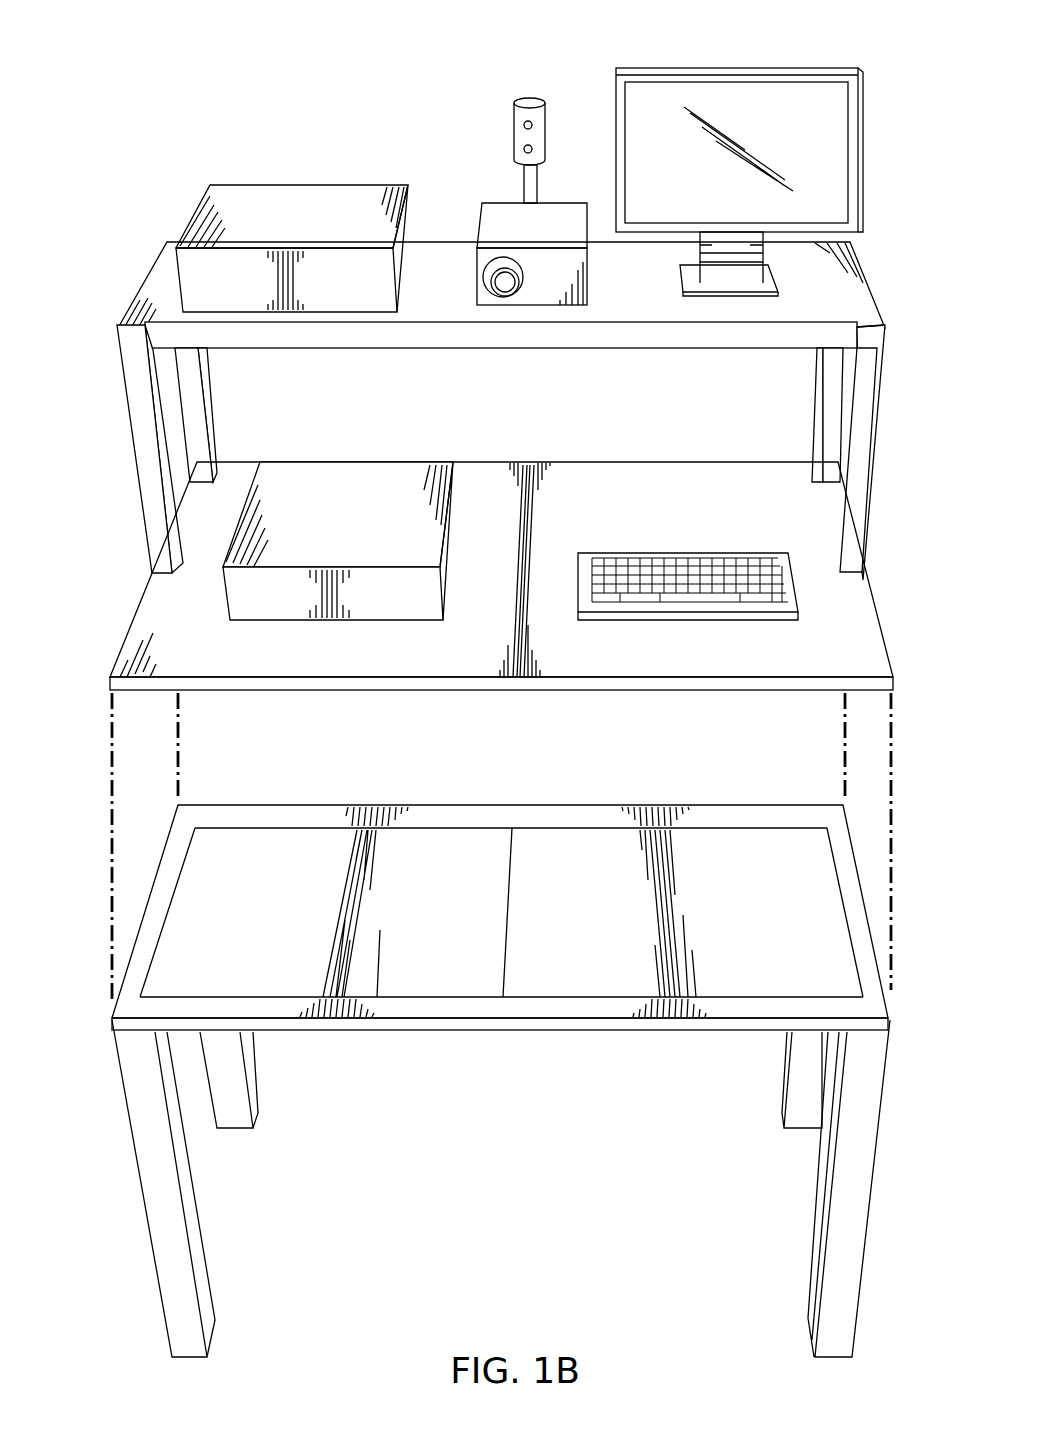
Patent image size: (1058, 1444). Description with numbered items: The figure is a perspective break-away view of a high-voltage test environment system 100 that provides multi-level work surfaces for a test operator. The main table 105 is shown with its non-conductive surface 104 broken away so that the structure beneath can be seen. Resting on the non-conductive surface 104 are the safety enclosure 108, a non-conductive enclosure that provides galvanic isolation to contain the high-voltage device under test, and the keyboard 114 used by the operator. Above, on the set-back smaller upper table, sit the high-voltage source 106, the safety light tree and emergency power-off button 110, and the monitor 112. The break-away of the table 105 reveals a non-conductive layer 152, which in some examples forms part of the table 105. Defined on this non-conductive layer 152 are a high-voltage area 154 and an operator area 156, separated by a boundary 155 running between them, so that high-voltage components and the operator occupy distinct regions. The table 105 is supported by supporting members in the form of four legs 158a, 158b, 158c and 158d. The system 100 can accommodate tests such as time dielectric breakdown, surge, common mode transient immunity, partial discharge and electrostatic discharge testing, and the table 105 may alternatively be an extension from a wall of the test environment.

The high-voltage test environment system 100 is at (362, 66).
The non-conductive surface 104 is at (623, 470).
The table 105 is at (135, 1148).
The high-voltage source 106 is at (247, 185).
The safety enclosure 108 is at (330, 462).
The safety light tree and emergency power-off button 110 is at (505, 198).
The monitor 112 is at (737, 68).
The keyboard 114 is at (685, 550).
The non-conductive layer 152 is at (458, 805).
The high-voltage area 154 is at (272, 852).
The boundary 155 is at (511, 846).
The operator area 156 is at (753, 850).
The leg 158a is at (167, 1252).
The leg 158b is at (850, 1255).
The leg 158c is at (785, 1085).
The leg 158d is at (253, 1078).